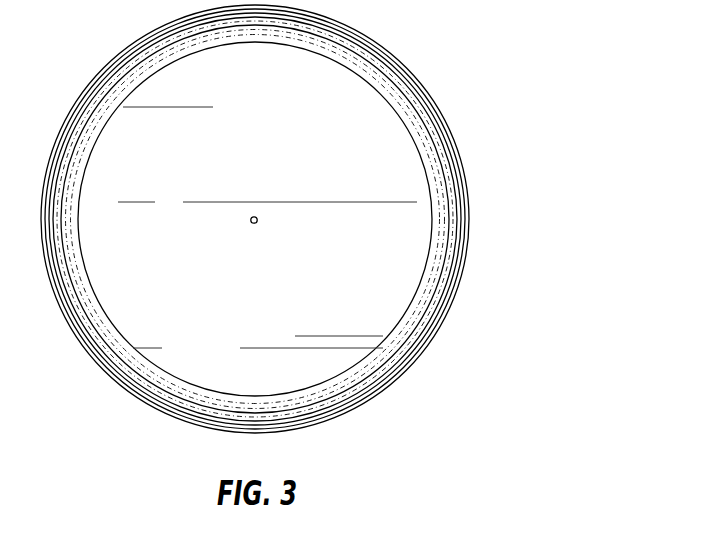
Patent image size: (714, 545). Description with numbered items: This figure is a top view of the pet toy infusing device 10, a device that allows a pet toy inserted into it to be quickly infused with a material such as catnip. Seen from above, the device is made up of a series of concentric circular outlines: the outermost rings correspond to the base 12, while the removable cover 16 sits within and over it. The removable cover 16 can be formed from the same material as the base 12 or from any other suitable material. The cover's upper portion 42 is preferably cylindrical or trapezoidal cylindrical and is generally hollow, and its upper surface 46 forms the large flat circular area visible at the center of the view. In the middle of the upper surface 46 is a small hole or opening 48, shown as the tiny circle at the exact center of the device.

The pet toy infusing device 10 is at (328, 219).
The base 12 is at (450, 307).
The removable cover 16 is at (395, 185).
The upper portion 42 is at (365, 322).
The upper surface 46 is at (352, 110).
The hole or opening 48 is at (254, 216).